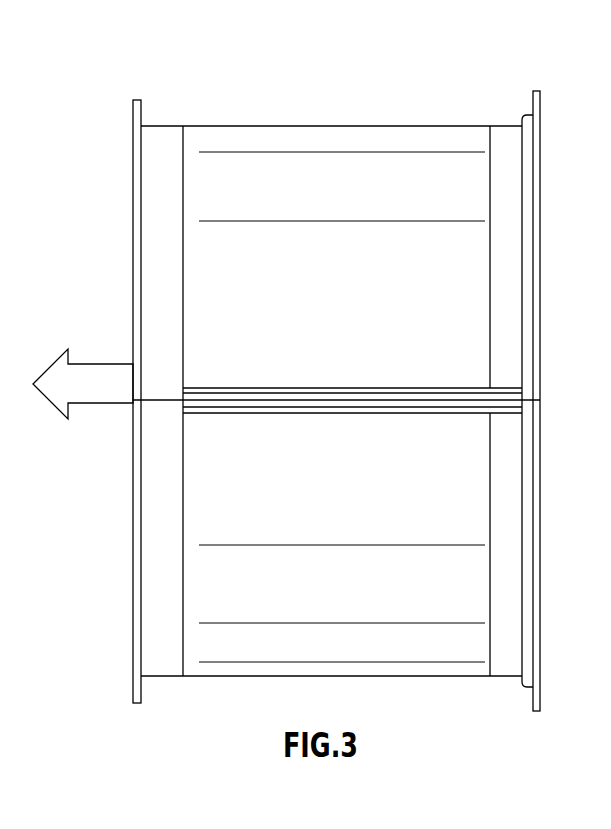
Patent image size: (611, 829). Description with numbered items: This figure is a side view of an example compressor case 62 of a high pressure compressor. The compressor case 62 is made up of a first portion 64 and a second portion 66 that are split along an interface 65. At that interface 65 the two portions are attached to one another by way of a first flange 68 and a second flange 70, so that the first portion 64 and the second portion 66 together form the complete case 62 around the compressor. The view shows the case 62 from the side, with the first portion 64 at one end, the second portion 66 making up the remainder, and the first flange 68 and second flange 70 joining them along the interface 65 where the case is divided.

The compressor case 62 is at (358, 368).
The first portion 64 is at (513, 143).
The interface 65 is at (506, 412).
The second portion 66 is at (470, 665).
The first flange 68 is at (475, 384).
The second flange 70 is at (475, 422).